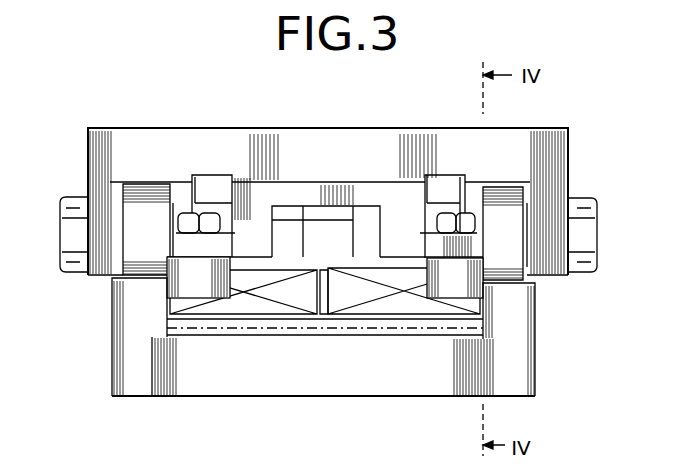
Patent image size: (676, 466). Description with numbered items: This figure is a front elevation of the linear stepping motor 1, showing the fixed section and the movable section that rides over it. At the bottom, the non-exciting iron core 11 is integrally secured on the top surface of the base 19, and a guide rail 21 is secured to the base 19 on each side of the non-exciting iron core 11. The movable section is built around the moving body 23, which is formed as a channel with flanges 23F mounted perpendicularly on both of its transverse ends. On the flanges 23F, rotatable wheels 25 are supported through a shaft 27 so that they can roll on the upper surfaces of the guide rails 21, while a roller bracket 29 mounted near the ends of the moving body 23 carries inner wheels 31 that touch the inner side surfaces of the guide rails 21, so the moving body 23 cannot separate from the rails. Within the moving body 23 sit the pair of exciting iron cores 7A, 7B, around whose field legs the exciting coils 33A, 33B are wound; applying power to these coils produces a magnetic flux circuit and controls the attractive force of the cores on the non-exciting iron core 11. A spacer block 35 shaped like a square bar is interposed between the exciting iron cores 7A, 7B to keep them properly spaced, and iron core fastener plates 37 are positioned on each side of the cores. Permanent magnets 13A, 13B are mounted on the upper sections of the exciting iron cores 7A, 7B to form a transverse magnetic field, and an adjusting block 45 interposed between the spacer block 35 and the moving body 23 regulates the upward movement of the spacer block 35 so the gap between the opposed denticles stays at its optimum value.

The linear stepping motor 1 is at (556, 124).
The moving body 23 is at (437, 129).
The flanges 23F is at (103, 263).
The rotatable wheels 25 is at (123, 184).
The shaft 27 is at (125, 229).
The roller bracket 29 is at (283, 183).
The iron core fastener plates 37 is at (177, 191).
The permanent magnet 13B is at (218, 202).
The permanent magnet 13A is at (367, 210).
The spacer block 35 is at (320, 237).
The adjusting block 45 is at (338, 217).
The exciting iron core 7B is at (291, 237).
The exciting iron core 7A is at (372, 241).
The exciting coil 33B is at (245, 303).
The exciting coil 33A is at (410, 305).
The inner wheels 31 is at (167, 299).
The base 19 is at (357, 380).
The guide rails 21 is at (140, 380).
The non-exciting iron core 11 is at (288, 337).